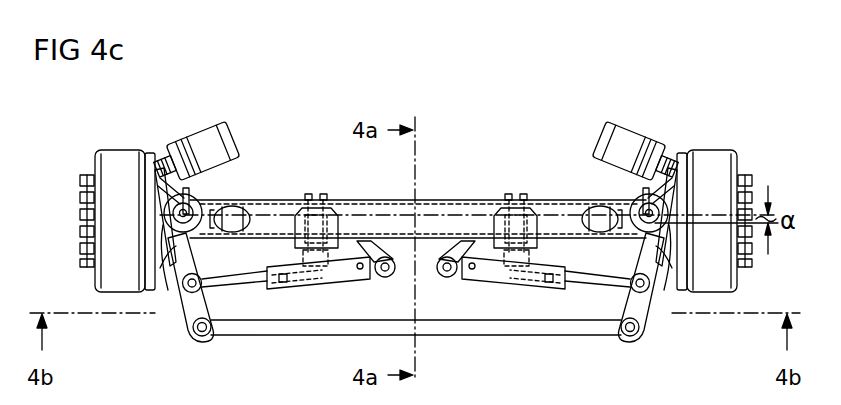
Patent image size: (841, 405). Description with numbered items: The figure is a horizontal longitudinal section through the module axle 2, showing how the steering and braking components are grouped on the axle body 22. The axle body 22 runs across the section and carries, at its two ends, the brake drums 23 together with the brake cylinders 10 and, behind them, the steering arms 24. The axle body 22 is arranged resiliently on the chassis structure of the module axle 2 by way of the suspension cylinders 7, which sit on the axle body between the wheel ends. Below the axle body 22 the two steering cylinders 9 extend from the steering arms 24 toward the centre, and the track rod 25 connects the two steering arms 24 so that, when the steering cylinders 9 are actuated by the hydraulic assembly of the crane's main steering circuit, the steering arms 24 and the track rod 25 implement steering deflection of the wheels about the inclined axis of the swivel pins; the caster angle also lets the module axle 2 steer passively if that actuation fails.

The module axle 2 is at (74, 114).
The suspension cylinders 7 is at (257, 205).
The steering cylinders 9 is at (338, 278).
The brake cylinders 10 is at (206, 140).
The axle body 22 is at (424, 215).
The brake drums 23 is at (118, 160).
The steering arms 24 is at (187, 313).
The track rod 25 is at (468, 330).